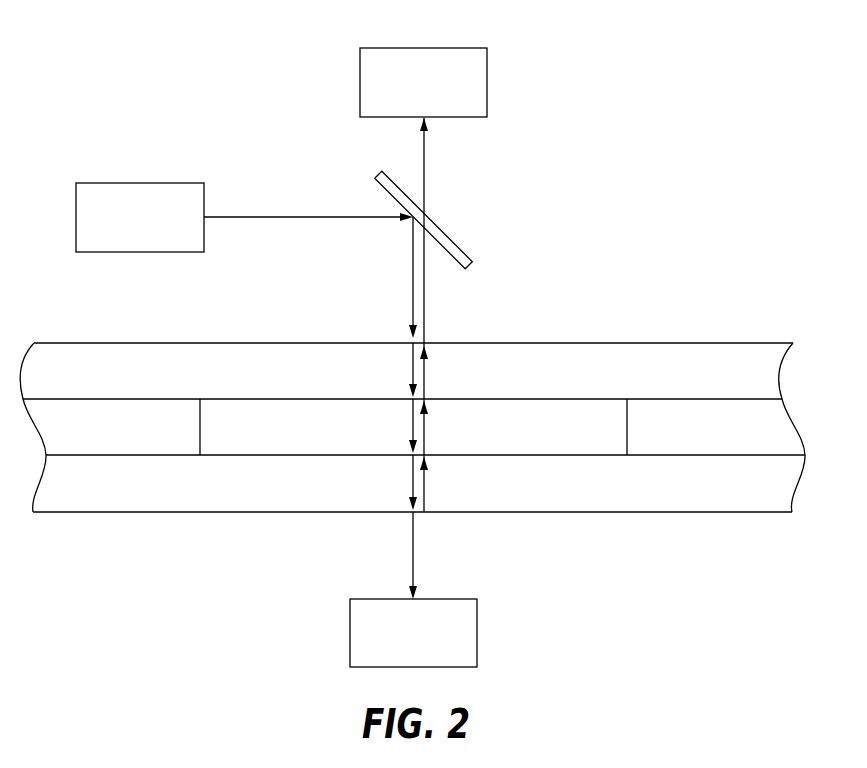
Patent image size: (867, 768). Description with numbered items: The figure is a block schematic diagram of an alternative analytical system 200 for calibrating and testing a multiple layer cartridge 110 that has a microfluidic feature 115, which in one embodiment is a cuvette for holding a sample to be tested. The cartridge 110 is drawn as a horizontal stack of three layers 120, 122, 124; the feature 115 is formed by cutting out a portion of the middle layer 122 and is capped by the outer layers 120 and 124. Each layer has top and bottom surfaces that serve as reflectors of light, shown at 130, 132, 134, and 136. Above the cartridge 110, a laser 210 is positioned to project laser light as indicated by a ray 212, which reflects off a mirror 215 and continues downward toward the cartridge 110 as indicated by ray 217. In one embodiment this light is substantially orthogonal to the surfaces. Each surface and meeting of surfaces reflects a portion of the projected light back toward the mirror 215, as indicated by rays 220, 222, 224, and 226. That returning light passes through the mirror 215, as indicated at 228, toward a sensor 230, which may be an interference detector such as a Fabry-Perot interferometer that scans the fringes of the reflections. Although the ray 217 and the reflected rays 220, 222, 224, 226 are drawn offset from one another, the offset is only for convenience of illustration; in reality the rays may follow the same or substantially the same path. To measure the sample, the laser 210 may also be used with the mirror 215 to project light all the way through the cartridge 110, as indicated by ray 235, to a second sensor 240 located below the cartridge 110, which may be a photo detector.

The analytical system 200 is at (731, 44).
The laser 210 is at (140, 183).
The ray 212 is at (312, 215).
The mirror 215 is at (440, 233).
The ray 217 is at (412, 284).
The ray 220 is at (426, 293).
The ray 222 is at (426, 373).
The ray 224 is at (426, 428).
The ray 226 is at (426, 483).
The light passing through mirror 228 is at (426, 153).
The sensor 230 is at (488, 82).
The ray 235 is at (416, 553).
The sensor 240 is at (478, 634).
The cartridge 110 is at (436, 425).
The microfluidic feature 115 is at (267, 438).
The layer 120 is at (432, 351).
The layer 122 is at (433, 478).
The layer 124 is at (443, 501).
The reflector surface 130 is at (735, 343).
The reflector surface 132 is at (693, 400).
The reflector surface 134 is at (693, 456).
The reflector surface 136 is at (693, 513).